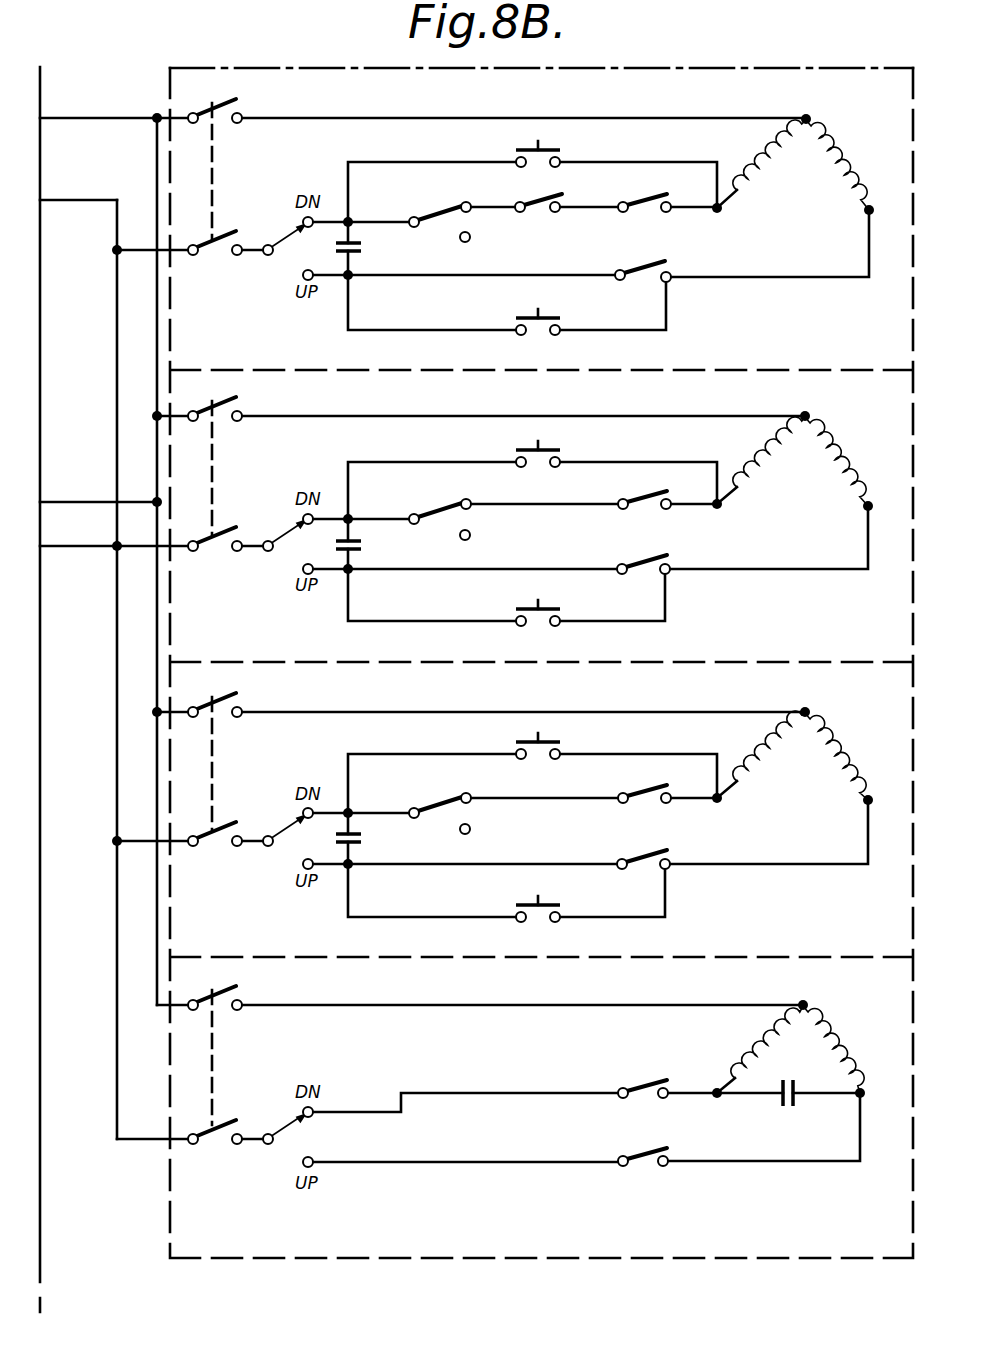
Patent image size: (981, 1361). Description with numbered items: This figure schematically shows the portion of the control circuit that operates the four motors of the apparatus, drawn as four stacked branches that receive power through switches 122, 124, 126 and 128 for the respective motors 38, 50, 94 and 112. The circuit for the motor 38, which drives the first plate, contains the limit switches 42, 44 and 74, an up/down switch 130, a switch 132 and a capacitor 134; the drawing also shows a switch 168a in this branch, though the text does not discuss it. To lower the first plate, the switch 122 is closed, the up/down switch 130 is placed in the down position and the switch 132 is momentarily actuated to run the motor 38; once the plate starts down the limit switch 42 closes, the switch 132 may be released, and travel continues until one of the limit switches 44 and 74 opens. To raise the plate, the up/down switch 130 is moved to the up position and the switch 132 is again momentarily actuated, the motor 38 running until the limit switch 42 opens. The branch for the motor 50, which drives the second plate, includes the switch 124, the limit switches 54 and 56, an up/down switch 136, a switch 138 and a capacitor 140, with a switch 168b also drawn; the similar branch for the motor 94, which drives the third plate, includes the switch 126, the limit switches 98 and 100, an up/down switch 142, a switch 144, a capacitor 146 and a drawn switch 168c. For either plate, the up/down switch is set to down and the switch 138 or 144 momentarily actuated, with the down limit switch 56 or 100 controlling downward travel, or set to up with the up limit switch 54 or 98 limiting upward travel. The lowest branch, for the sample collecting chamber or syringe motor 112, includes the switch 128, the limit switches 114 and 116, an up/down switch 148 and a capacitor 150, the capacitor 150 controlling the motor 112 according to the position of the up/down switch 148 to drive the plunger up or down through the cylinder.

The switch 122 is at (264, 196).
The switch 124 is at (264, 493).
The switch 126 is at (264, 786).
The switch 128 is at (264, 1079).
The up/down switch 130 is at (288, 240).
The up/down switch 136 is at (288, 536).
The up/down switch 142 is at (288, 831).
The up/down switch 148 is at (288, 1130).
The switch 168a is at (440, 208).
The switch 168b is at (430, 510).
The switch 168c is at (430, 803).
The switch 132 is at (548, 151).
The switch 138 is at (540, 450).
The switch 144 is at (546, 742).
The capacitor 134 is at (366, 246).
The capacitor 140 is at (364, 546).
The capacitor 146 is at (360, 838).
The limit switch 74 is at (539, 204).
The limit switch 44 is at (641, 204).
The limit switch 42 is at (649, 266).
The limit switch 56 is at (645, 502).
The limit switch 54 is at (640, 564).
The limit switch 100 is at (648, 796).
The limit switch 98 is at (638, 860).
The limit switch 116 is at (647, 1088).
The limit switch 114 is at (633, 1158).
The motor 38 is at (812, 194).
The motor 50 is at (807, 491).
The motor 94 is at (810, 786).
The syringe motor 112 is at (807, 1073).
The capacitor 150 is at (772, 1103).